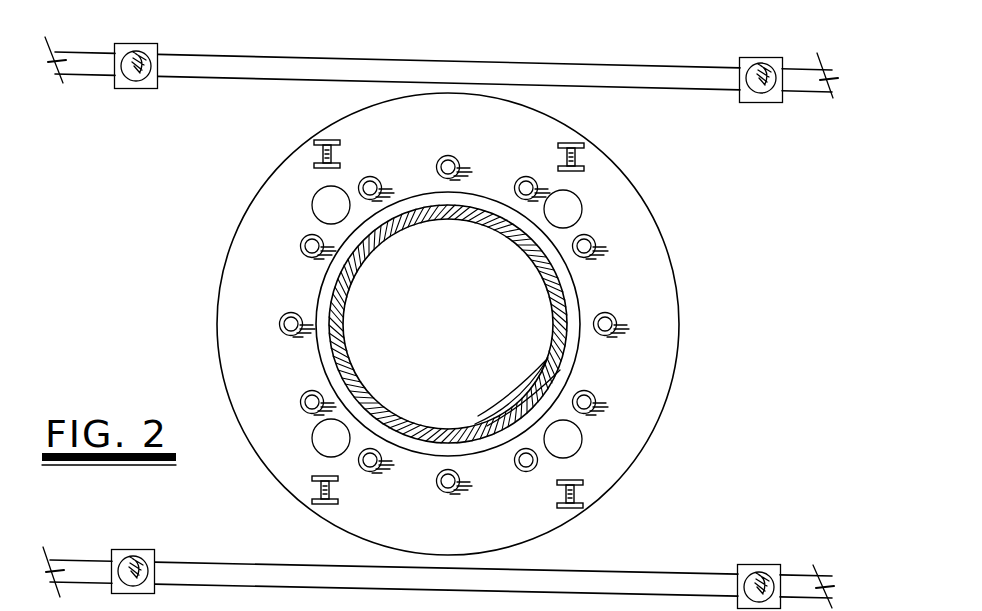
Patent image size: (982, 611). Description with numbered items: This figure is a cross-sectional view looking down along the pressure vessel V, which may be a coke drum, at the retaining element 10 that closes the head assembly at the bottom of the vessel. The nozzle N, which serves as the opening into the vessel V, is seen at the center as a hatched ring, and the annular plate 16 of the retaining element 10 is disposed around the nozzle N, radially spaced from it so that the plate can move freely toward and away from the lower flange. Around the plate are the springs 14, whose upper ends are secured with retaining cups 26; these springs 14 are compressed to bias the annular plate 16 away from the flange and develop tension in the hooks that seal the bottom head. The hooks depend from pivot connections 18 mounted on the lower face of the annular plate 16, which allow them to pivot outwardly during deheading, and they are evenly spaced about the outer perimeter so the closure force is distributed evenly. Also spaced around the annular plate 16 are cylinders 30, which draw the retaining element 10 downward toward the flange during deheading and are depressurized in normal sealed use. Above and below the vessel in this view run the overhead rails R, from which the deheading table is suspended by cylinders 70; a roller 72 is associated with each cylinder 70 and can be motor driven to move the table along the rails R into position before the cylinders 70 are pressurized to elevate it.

The retaining element 10 is at (715, 336).
The spring 14 is at (450, 158).
The annular plate 16 is at (408, 165).
The pivot connection 18 is at (312, 486).
The retaining cup 26 is at (436, 169).
The cylinder 30 is at (561, 205).
The cylinder 70 is at (752, 96).
The roller 72 is at (775, 92).
The overhead rail R is at (573, 72).
The nozzle N is at (560, 317).
The pressure vessel V is at (560, 380).